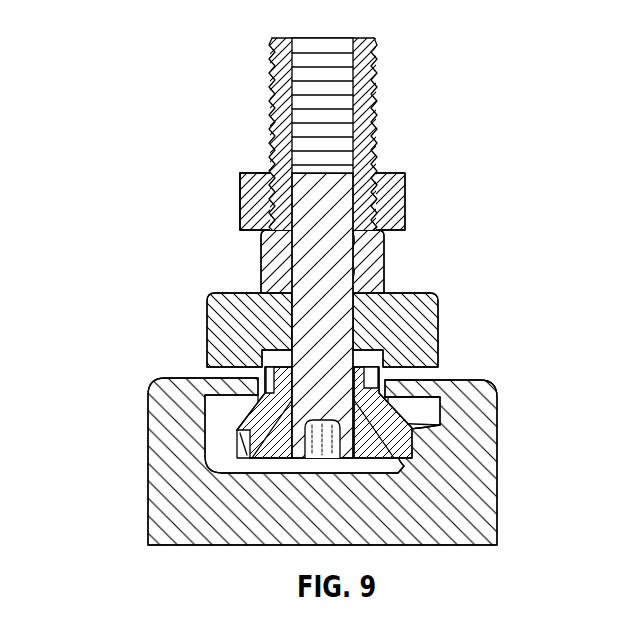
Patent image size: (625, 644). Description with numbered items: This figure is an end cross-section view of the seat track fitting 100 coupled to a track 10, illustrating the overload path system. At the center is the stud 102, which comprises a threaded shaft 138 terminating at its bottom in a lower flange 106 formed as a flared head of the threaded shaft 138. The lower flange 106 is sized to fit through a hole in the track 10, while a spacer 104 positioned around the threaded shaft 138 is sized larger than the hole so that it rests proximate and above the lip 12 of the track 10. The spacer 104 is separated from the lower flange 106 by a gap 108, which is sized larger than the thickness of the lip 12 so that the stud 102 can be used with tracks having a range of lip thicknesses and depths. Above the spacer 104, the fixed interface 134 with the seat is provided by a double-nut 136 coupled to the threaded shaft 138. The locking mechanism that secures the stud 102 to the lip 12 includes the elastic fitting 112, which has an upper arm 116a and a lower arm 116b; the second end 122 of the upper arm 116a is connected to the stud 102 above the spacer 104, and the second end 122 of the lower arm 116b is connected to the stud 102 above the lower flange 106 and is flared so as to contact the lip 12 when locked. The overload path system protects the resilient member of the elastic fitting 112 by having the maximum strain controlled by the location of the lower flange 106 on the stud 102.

The seat track fitting 100 is at (111, 135).
The threaded shaft 138 is at (277, 100).
The stud 102 is at (368, 106).
The double-nut 136 is at (247, 190).
The fixed interface 134 is at (393, 197).
The elastic fitting 112 is at (275, 273).
The upper arm 116a is at (373, 257).
The spacer 104 is at (420, 323).
The gap 108 is at (292, 386).
The lip 12 is at (413, 390).
The lower arm 116b is at (390, 423).
The second end 122 is at (255, 450).
The lower flange 106 is at (387, 443).
The track 10 is at (182, 503).